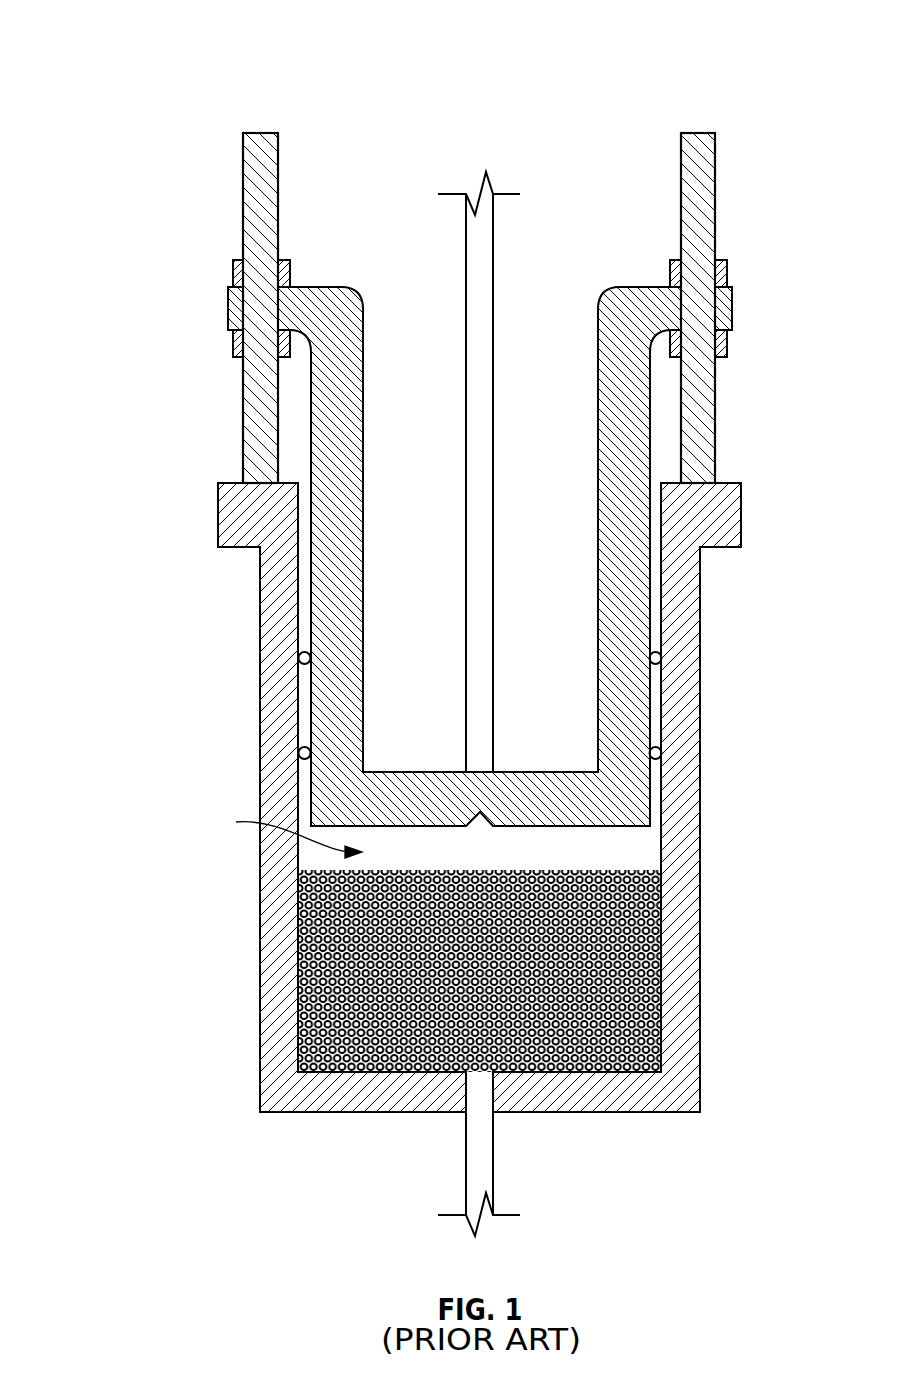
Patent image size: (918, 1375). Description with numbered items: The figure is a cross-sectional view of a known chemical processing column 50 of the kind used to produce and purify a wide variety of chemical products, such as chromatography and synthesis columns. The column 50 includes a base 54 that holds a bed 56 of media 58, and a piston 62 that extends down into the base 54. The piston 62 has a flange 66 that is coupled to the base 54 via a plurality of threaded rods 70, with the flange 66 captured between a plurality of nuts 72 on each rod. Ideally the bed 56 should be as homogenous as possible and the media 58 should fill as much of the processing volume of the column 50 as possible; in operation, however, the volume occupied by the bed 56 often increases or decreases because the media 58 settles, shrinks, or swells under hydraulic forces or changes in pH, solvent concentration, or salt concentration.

The chemical processing column 50 is at (114, 37).
The base 54 is at (260, 928).
The bed 56 is at (281, 833).
The media 58 is at (300, 1035).
The piston 62 is at (610, 336).
The flange 66 is at (732, 308).
The threaded rods 70 is at (243, 418).
The nuts 72 is at (233, 272).